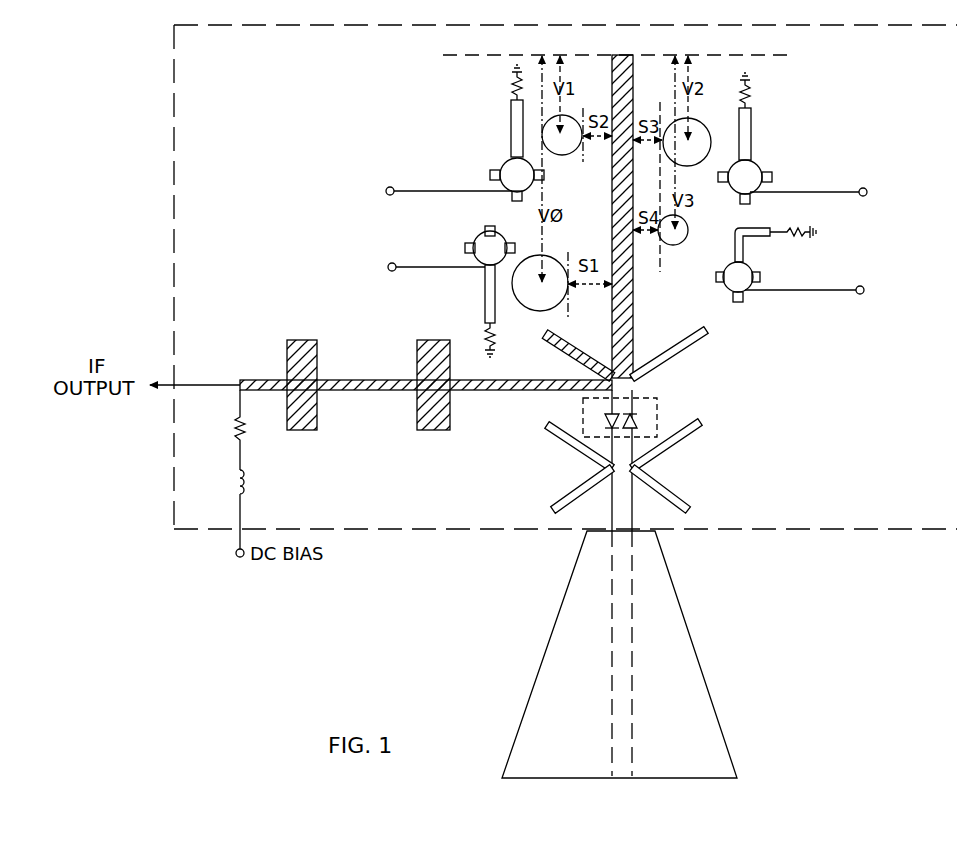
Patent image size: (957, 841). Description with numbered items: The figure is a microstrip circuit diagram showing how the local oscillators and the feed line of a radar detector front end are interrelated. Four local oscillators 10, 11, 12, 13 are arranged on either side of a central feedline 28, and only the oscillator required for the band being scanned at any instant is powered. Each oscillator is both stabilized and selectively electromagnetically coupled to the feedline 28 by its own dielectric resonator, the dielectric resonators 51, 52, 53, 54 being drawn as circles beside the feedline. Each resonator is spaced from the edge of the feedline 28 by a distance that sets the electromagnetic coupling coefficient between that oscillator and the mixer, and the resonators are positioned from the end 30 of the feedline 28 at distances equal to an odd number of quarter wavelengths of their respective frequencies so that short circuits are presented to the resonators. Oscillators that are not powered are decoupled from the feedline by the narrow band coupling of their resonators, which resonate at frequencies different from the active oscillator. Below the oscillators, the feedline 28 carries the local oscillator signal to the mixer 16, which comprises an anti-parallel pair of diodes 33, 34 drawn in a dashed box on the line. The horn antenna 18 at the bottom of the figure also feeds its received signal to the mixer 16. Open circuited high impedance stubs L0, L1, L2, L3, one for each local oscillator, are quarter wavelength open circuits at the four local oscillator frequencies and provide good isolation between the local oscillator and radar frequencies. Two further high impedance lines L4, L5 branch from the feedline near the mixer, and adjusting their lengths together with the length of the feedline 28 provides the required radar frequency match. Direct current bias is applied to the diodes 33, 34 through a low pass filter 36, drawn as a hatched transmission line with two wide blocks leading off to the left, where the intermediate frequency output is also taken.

The local oscillator 10 is at (482, 240).
The local oscillator 11 is at (506, 170).
The local oscillator 12 is at (750, 178).
The local oscillator 13 is at (742, 272).
The mixer 16 is at (650, 398).
The antenna 18 is at (677, 648).
The feedline 28 is at (633, 310).
The end of the feedline 30 is at (632, 55).
The diode 33 is at (603, 418).
The diode 34 is at (638, 419).
The low pass filter 36 is at (350, 378).
The dielectric resonator 51 is at (544, 308).
The dielectric resonator 52 is at (556, 155).
The dielectric resonator 53 is at (682, 166).
The dielectric resonator 54 is at (683, 244).
The open circuited high impedance stub L0 is at (568, 492).
The open circuited high impedance stub L1 is at (566, 447).
The open circuited high impedance stub L2 is at (676, 445).
The open circuited high impedance stub L3 is at (673, 492).
The high impedance line L4 is at (564, 349).
The high impedance line L5 is at (683, 349).